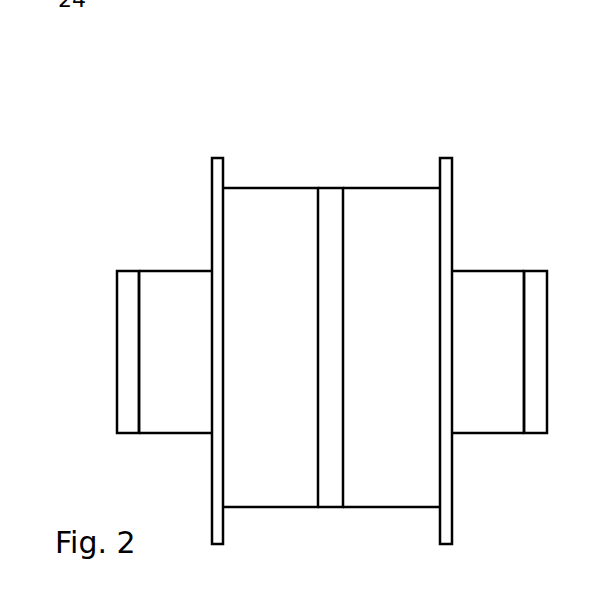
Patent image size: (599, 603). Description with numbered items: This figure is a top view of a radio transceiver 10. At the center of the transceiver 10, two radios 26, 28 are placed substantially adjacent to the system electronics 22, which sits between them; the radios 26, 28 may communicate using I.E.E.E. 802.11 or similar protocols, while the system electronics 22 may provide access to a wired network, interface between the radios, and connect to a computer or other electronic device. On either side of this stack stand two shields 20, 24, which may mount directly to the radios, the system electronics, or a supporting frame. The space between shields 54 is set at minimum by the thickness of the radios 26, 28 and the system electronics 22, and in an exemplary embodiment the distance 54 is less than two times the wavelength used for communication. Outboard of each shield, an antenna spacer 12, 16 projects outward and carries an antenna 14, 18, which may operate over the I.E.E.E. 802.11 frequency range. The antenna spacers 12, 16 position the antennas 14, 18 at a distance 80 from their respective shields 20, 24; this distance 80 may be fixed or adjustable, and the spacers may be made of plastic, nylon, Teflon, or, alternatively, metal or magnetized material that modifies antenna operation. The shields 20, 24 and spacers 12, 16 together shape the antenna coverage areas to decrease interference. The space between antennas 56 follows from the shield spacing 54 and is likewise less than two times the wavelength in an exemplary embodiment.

The radio transceiver 10 is at (356, 37).
The antenna spacer 12 is at (180, 271).
The antenna 14 is at (129, 271).
The antenna spacer 16 is at (511, 271).
The antenna 18 is at (538, 271).
The shield 20 is at (212, 544).
The system electronics 22 is at (336, 508).
The shield 24 is at (440, 544).
The radio 26 is at (281, 508).
The radio 28 is at (396, 508).
The space between shields 54 is at (443, 148).
The space between antennas 56 is at (150, 100).
The distance 80 is at (460, 447).